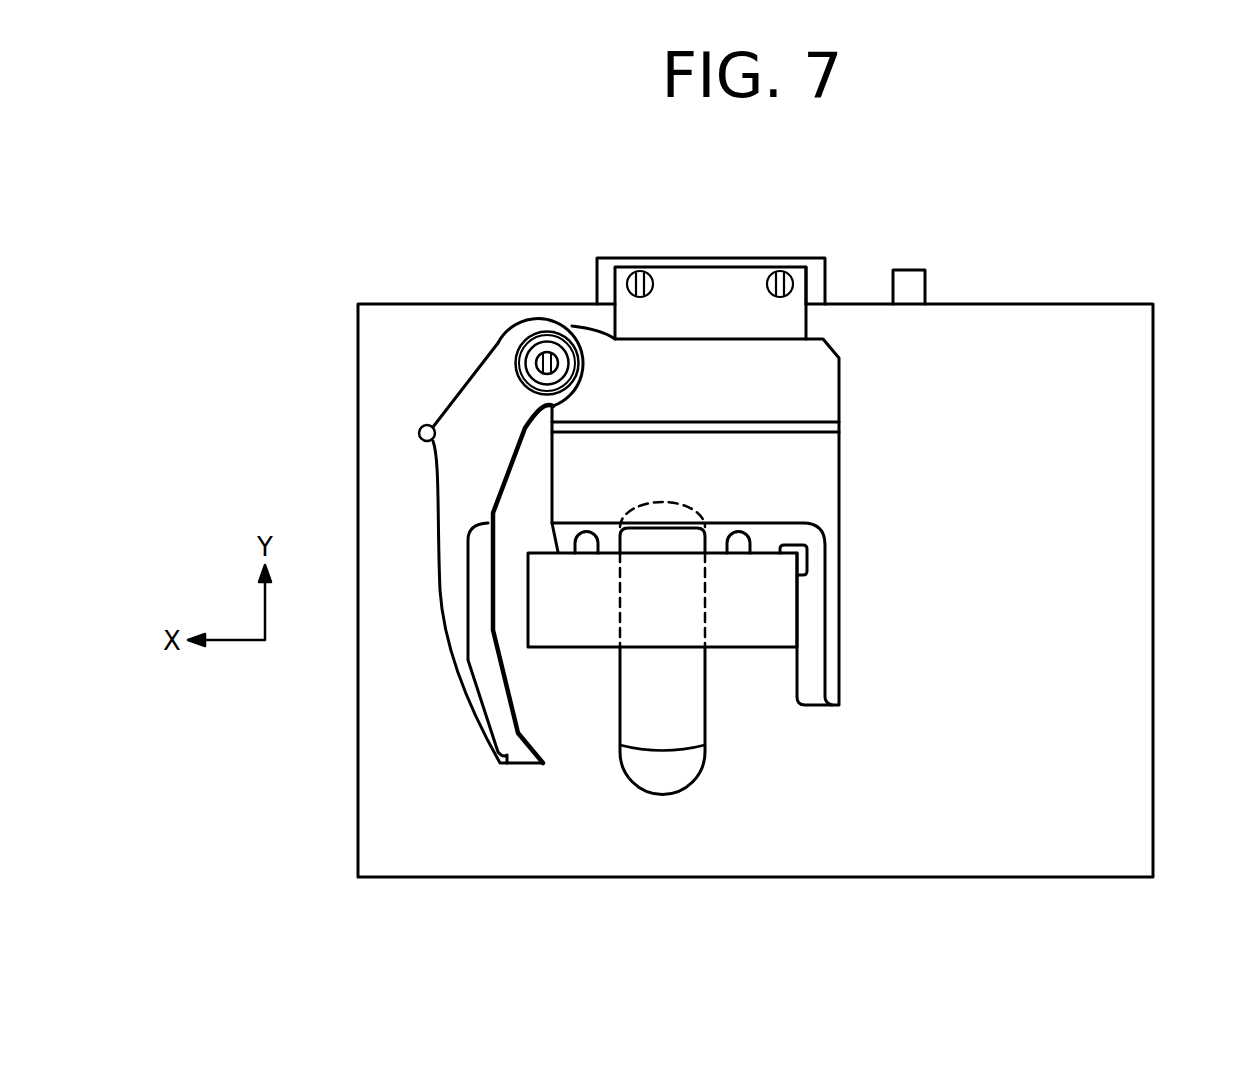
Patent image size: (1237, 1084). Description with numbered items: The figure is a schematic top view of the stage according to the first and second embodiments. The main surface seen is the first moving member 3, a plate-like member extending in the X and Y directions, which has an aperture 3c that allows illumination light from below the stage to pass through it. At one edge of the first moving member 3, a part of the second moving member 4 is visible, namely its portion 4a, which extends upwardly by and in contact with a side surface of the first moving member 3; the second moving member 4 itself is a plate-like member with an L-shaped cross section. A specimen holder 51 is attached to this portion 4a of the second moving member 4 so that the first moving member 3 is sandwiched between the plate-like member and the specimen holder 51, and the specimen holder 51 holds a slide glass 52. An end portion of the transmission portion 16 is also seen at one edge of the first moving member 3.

The first moving member 3 is at (1137, 398).
The aperture 3c is at (690, 713).
The second moving member 4 is at (687, 256).
The portion 4a is at (830, 277).
The transmission portion 16 is at (915, 283).
The specimen holder 51 is at (615, 355).
The slide glass 52 is at (587, 623).